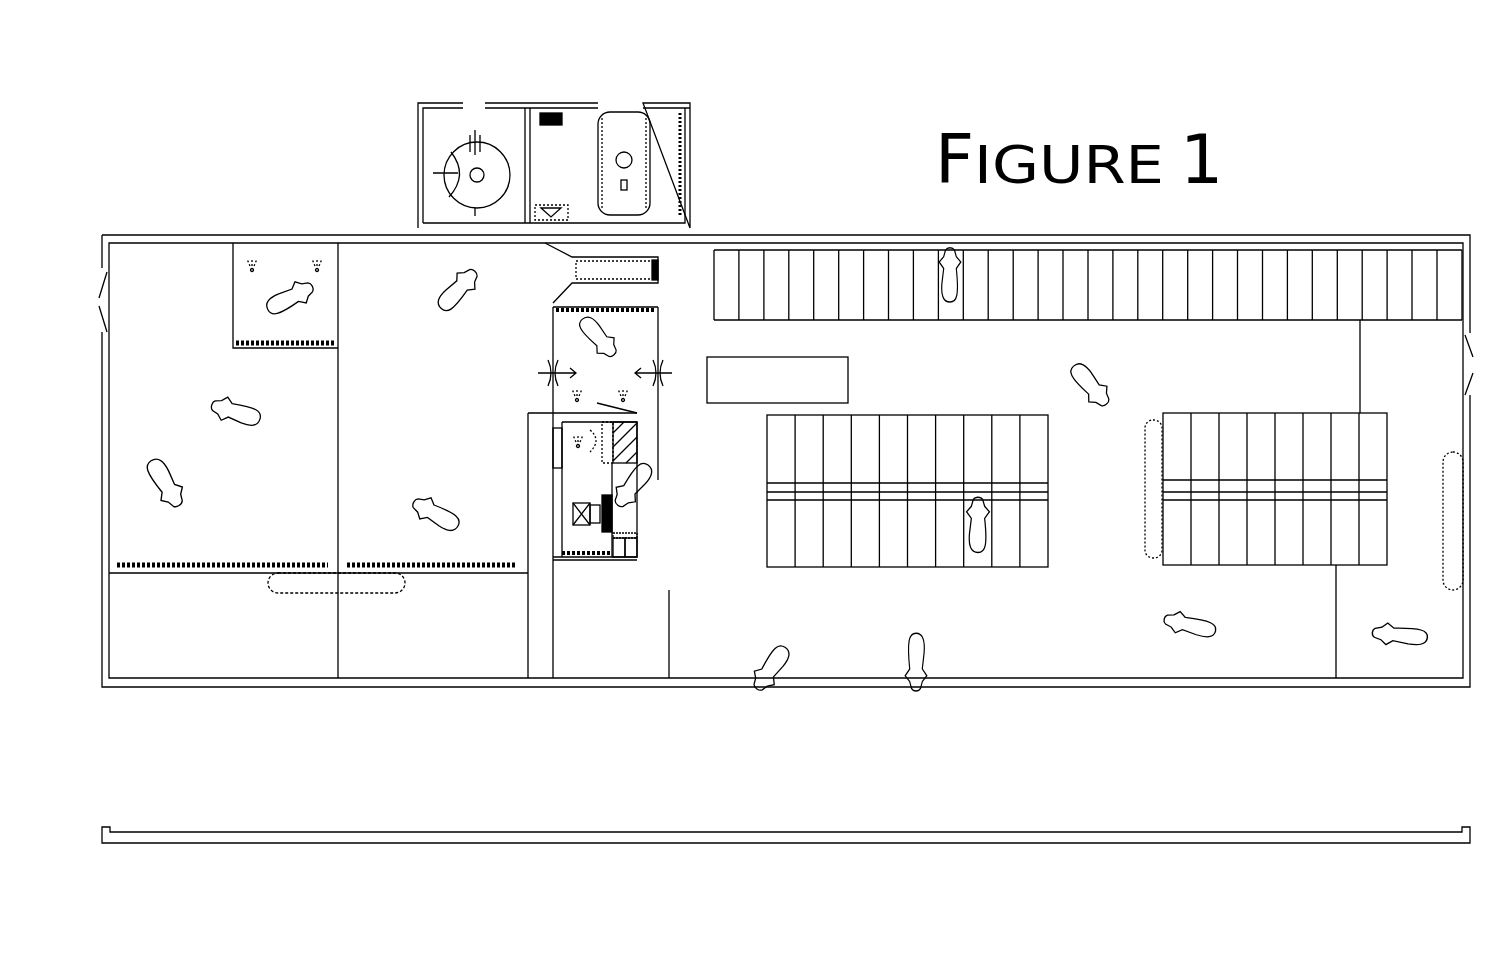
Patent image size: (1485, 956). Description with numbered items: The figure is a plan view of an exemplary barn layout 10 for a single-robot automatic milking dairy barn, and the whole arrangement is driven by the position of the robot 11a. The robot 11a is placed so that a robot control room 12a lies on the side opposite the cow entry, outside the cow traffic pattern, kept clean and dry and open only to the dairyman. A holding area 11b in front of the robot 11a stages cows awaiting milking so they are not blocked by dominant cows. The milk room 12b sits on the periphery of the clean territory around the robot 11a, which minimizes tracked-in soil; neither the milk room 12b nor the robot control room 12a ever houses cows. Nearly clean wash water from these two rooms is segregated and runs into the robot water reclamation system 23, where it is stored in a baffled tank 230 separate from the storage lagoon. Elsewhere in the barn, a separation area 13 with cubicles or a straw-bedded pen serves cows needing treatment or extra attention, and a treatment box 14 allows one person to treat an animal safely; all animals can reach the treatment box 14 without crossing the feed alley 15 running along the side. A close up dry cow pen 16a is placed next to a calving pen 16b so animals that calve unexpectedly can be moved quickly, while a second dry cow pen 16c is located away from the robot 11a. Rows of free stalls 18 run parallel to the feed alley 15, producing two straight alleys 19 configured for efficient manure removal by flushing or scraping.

The barn layout 10 is at (318, 62).
The robot 11a is at (640, 458).
The holding area 11b is at (653, 337).
The robot control room 12a is at (601, 490).
The milk room 12b is at (568, 180).
The separation area 13 is at (415, 360).
The treatment box 14 is at (635, 282).
The feed alley 15 is at (598, 766).
The close up dry cow pen 16a is at (188, 423).
The calving pen 16b is at (288, 300).
The second dry cow pen 16c is at (1421, 377).
The free stalls 18 is at (813, 303).
The straight alleys 19 is at (1208, 379).
The robot water reclamation system 23 is at (513, 138).
The baffled tank 230 is at (445, 168).